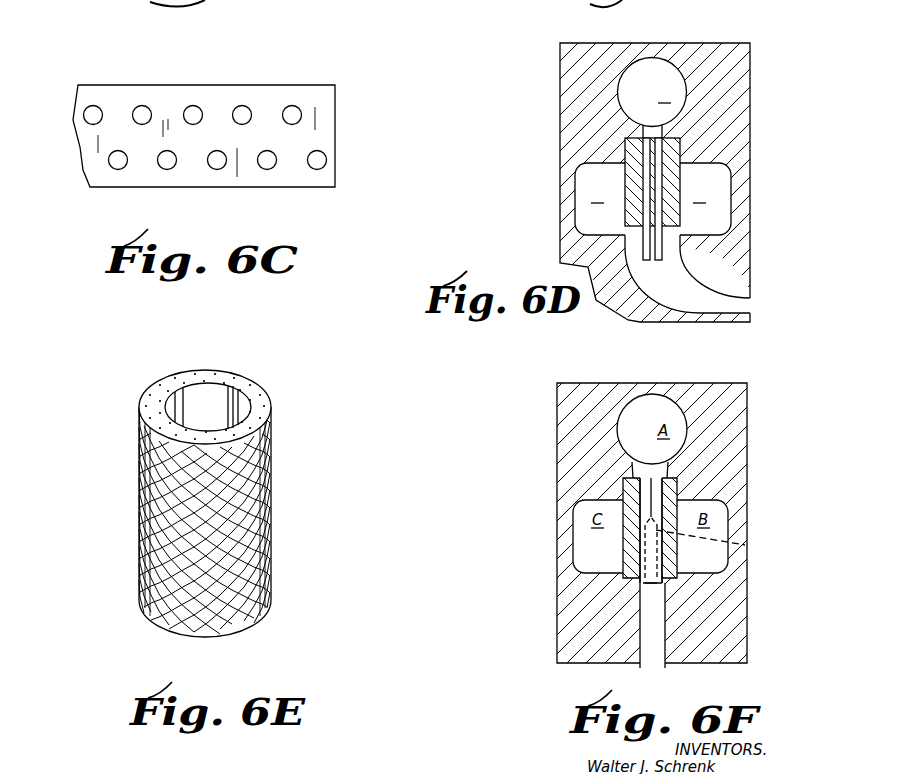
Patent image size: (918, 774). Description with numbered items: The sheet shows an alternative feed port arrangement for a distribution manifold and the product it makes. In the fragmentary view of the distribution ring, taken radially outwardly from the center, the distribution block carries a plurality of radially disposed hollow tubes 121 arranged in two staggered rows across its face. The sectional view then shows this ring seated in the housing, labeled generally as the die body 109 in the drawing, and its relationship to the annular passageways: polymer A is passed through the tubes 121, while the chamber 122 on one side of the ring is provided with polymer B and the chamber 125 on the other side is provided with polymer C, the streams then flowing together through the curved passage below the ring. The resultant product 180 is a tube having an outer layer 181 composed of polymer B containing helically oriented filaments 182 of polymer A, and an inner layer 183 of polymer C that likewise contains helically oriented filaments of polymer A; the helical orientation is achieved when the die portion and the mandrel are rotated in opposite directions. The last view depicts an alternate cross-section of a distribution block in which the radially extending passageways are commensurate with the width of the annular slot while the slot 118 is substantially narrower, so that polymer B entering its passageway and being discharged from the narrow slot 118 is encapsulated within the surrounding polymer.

In FIG. 6C, the hollow tubes 121 is at (292, 117).
In FIG. 6D, the hollow tubes 121 is at (658, 256).
In FIG. 6D, the die body block 109 is at (633, 88).
In FIG. 6D, the chamber 125 is at (580, 187).
In FIG. 6D, the chamber 122 is at (720, 213).
In FIG. 6F, the slot 118 is at (657, 583).
In FIG. 6E, the product 180 is at (207, 490).
In FIG. 6E, the outer layer 181 is at (145, 393).
In FIG. 6E, the inner layer 183 is at (178, 386).
In FIG. 6E, the helically oriented filaments 182 is at (240, 393).